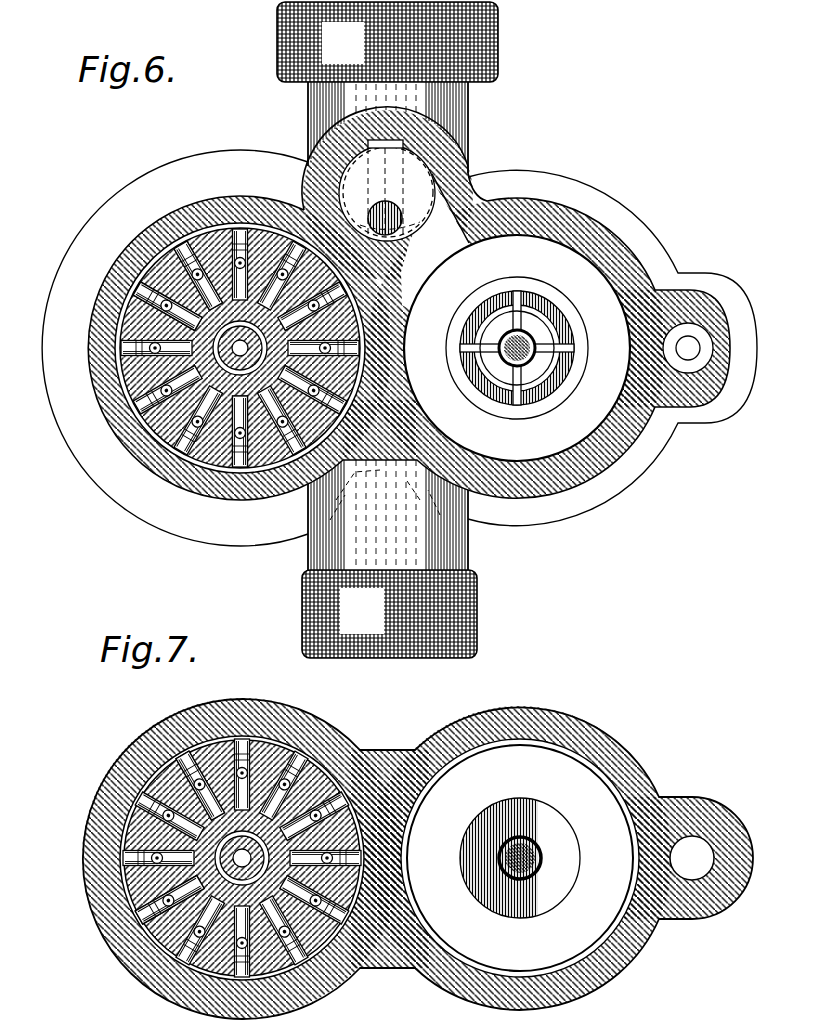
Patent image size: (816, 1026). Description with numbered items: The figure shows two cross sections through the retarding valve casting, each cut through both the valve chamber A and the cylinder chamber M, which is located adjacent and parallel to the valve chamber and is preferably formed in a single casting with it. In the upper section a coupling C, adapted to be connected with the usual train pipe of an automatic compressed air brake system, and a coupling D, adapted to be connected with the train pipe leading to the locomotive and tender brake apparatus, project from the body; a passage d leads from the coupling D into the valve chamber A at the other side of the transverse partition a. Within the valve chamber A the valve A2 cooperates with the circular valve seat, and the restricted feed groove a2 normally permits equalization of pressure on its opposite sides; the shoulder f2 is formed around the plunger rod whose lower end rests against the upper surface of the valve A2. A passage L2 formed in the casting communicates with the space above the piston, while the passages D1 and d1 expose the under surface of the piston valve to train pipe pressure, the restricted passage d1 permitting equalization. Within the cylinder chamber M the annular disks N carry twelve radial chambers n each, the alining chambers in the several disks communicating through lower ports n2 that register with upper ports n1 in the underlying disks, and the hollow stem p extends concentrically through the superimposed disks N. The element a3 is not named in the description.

In FIG. 6, the coupling D is at (667, 458).
In FIG. 6, the coupling C is at (389, 614).
In FIG. 6, the cylinder chamber M is at (102, 283).
In FIG. 7, the cylinder chamber M is at (157, 740).
In FIG. 6, the annular disks N is at (150, 246).
In FIG. 7, the annular disks N is at (268, 765).
In FIG. 6, the radial chambers n is at (190, 322).
In FIG. 7, the radial chambers n is at (242, 858).
In FIG. 6, the upper ports n1 is at (196, 428).
In FIG. 7, the upper ports n1 is at (175, 822).
In FIG. 6, the lower ports n2 is at (166, 392).
In FIG. 7, the lower ports n2 is at (180, 938).
In FIG. 6, the hollow stem p is at (232, 352).
In FIG. 7, the hollow stem p is at (234, 860).
In FIG. 6, the passage d is at (455, 230).
In FIG. 6, the passage d1 is at (400, 190).
In FIG. 6, the passage D1 is at (426, 307).
In FIG. 6, the valve chamber A is at (517, 348).
In FIG. 7, the valve chamber A is at (520, 858).
In FIG. 7, the transverse partition a is at (524, 866).
In FIG. 6, the feed groove a2 is at (465, 363).
In FIG. 6, the inner ring a3 is at (529, 328).
In FIG. 7, the inner ring a3 is at (543, 853).
In FIG. 6, the valve A2 is at (545, 366).
In FIG. 6, the shoulder f2 is at (534, 336).
In FIG. 7, the shoulder f2 is at (533, 868).
In FIG. 6, the passage L2 is at (692, 333).
In FIG. 7, the passage L2 is at (692, 853).